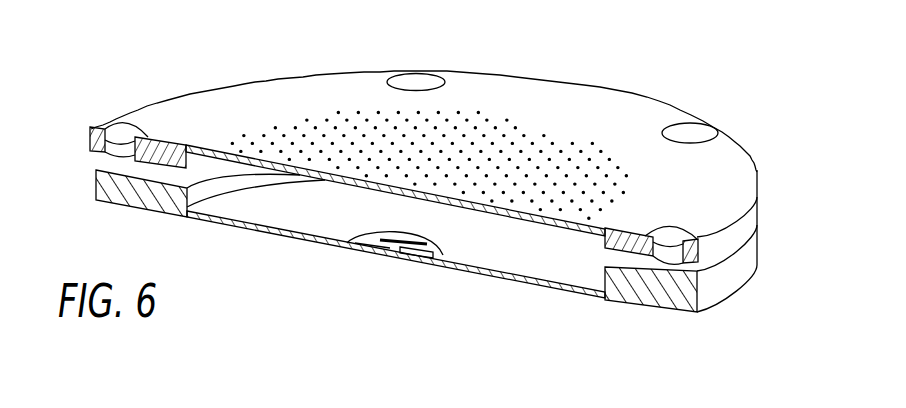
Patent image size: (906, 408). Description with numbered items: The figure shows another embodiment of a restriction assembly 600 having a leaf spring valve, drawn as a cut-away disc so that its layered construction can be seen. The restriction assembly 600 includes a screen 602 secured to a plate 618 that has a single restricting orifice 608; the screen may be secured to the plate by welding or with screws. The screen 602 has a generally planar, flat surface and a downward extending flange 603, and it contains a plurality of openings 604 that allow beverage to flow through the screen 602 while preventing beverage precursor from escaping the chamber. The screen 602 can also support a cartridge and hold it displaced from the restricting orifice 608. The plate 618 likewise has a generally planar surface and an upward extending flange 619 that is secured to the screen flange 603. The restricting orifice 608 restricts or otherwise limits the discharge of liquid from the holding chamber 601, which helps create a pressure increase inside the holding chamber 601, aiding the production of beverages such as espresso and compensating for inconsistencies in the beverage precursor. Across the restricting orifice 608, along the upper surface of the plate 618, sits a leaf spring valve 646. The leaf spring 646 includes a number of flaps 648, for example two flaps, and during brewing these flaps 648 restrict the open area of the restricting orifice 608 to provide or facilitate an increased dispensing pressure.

The restriction assembly 600 is at (110, 70).
The holding chamber 601 is at (493, 259).
The screen 602 is at (733, 155).
The downward extending flange 603 is at (106, 128).
The openings 604 is at (630, 128).
The restricting orifice 608 is at (397, 262).
The plate 618 is at (290, 218).
The upward extending flange 619 is at (662, 300).
The leaf spring valve 646 is at (363, 255).
The flaps 648 is at (417, 257).